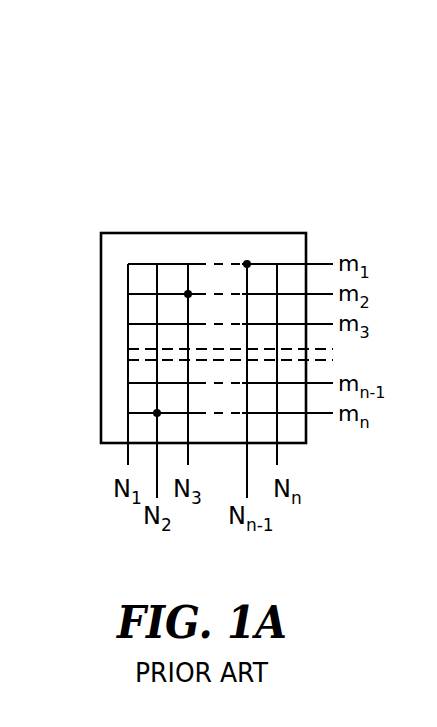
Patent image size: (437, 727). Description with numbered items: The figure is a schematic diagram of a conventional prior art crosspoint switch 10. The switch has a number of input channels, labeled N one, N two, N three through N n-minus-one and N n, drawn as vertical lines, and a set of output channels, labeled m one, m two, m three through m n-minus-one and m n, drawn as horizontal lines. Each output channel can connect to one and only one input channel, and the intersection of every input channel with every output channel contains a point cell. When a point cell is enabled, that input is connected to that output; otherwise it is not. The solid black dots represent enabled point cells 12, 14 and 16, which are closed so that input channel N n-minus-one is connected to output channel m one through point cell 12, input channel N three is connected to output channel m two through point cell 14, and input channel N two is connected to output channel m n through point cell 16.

The crosspoint switch 10 is at (150, 233).
The point cell 12 is at (248, 264).
The point cell 14 is at (188, 294).
The point cell 16 is at (157, 413).